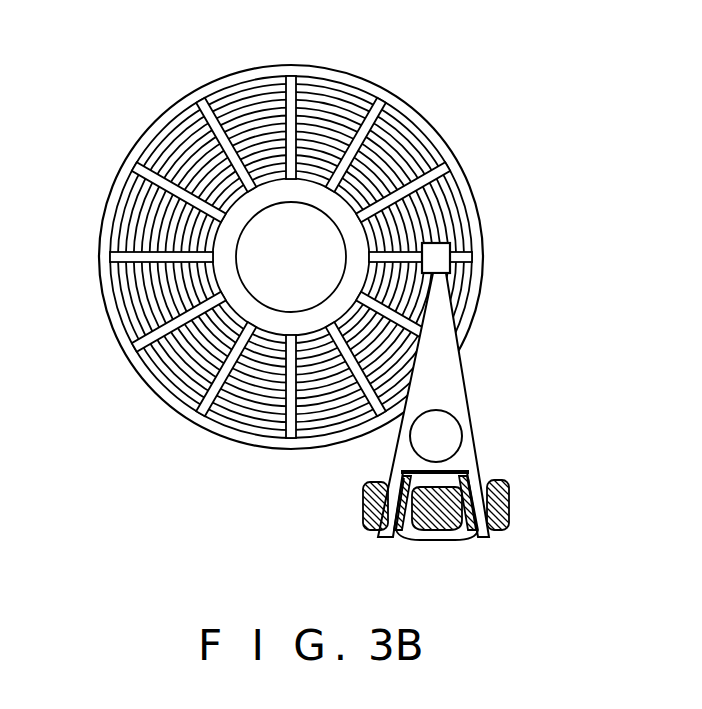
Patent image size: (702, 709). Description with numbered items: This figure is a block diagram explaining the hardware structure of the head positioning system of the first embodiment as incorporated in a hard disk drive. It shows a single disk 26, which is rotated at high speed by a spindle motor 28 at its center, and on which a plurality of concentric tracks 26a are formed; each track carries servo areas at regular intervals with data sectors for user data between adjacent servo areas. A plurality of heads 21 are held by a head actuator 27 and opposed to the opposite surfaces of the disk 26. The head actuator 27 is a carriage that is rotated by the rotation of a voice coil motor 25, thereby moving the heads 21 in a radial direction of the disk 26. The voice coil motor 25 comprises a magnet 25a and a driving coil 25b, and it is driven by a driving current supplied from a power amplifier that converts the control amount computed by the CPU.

The head 21 is at (446, 242).
The voice coil motor 25 is at (457, 546).
The magnet 25a is at (369, 522).
The driving coil 25b is at (414, 538).
The disk 26 is at (118, 178).
The concentric track 26a is at (171, 124).
The head actuator 27 is at (393, 453).
The spindle motor 28 is at (329, 215).